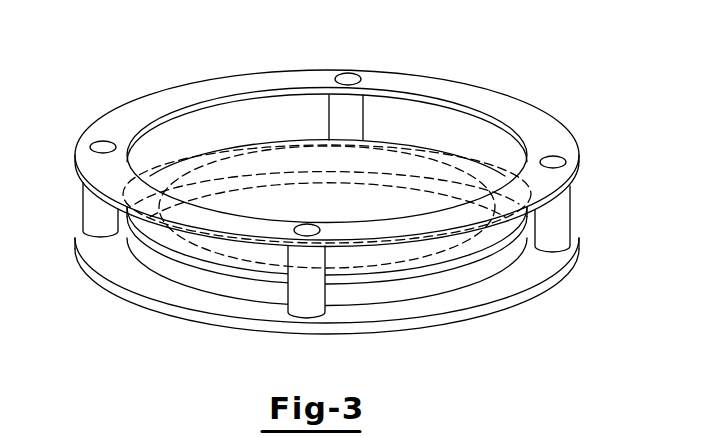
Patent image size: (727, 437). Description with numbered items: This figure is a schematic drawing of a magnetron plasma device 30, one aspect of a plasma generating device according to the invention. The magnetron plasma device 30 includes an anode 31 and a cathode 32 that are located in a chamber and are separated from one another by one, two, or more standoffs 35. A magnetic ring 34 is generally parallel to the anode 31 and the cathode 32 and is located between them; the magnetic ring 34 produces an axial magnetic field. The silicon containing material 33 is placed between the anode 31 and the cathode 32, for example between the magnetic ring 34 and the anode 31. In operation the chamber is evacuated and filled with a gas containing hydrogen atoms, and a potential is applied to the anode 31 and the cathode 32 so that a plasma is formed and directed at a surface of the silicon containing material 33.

The magnetron plasma device 30 is at (109, 76).
The anode 31 is at (479, 94).
The cathode 32 is at (98, 252).
The silicon containing material 33 is at (349, 213).
The magnetic ring 34 is at (497, 268).
The standoffs 35 is at (568, 210).